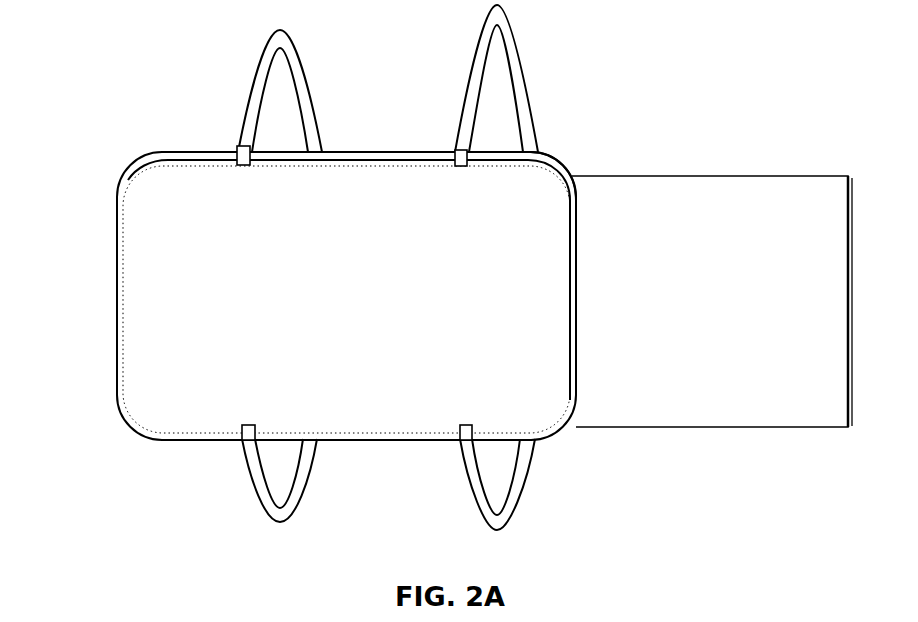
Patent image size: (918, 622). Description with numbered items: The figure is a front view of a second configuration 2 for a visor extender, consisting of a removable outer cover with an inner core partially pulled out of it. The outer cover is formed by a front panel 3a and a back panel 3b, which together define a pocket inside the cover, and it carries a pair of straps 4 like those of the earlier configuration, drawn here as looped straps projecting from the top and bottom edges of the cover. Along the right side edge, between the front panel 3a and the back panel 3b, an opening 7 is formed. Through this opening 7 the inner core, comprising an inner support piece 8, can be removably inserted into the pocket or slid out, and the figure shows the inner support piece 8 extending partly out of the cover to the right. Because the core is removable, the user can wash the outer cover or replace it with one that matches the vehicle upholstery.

The configuration for the visor extender 2 is at (112, 160).
The front panel 3a is at (344, 186).
The back panel 3b is at (397, 162).
The pair of straps 4 is at (262, 62).
The opening 7 is at (564, 170).
The inner support piece 8 is at (747, 207).